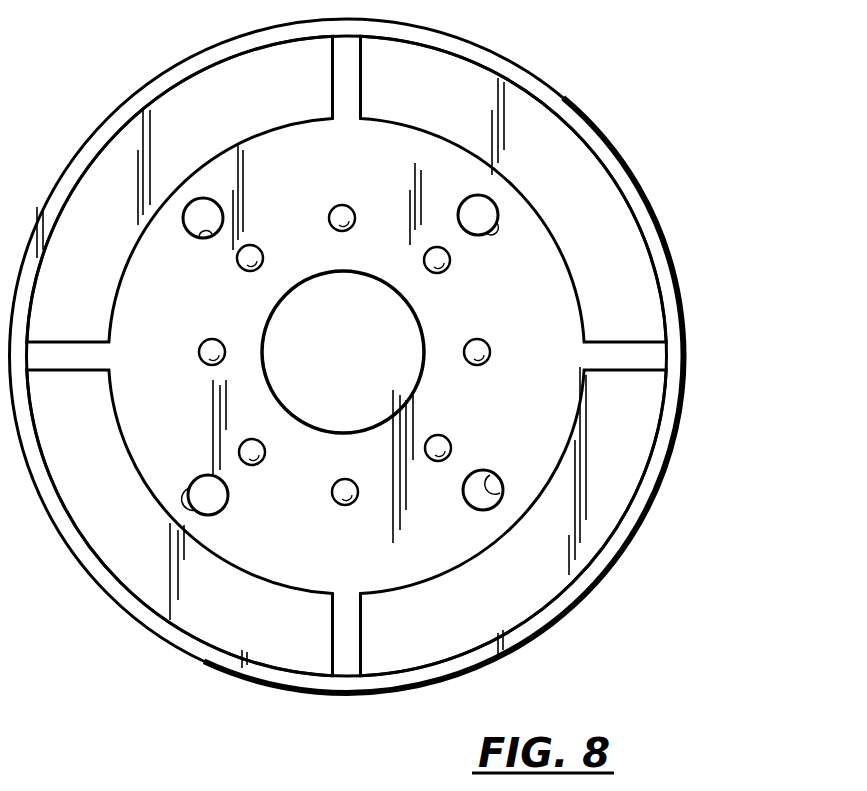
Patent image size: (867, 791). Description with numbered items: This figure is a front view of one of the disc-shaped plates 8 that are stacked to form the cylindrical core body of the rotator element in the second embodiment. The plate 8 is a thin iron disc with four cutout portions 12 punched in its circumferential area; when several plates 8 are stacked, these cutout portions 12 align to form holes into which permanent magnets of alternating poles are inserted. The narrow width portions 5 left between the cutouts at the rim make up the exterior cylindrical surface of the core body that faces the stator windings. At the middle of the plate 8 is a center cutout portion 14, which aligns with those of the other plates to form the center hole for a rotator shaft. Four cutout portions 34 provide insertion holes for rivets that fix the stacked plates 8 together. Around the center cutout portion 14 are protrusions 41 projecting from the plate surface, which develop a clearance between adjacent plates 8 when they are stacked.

The width portion 5 is at (665, 247).
The first disc-shaped plate 8 is at (688, 357).
The cutout portion 12 is at (176, 102).
The center cutout portion 14 is at (405, 342).
The cutout portion 34 is at (204, 236).
The protrusion 41 is at (212, 350).